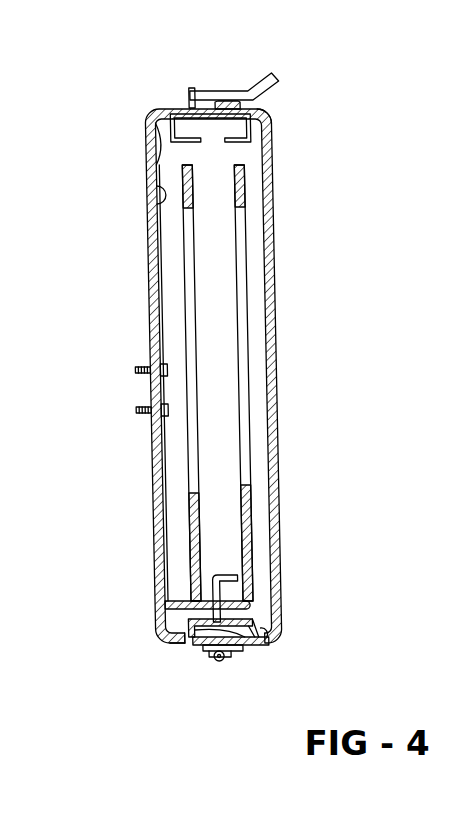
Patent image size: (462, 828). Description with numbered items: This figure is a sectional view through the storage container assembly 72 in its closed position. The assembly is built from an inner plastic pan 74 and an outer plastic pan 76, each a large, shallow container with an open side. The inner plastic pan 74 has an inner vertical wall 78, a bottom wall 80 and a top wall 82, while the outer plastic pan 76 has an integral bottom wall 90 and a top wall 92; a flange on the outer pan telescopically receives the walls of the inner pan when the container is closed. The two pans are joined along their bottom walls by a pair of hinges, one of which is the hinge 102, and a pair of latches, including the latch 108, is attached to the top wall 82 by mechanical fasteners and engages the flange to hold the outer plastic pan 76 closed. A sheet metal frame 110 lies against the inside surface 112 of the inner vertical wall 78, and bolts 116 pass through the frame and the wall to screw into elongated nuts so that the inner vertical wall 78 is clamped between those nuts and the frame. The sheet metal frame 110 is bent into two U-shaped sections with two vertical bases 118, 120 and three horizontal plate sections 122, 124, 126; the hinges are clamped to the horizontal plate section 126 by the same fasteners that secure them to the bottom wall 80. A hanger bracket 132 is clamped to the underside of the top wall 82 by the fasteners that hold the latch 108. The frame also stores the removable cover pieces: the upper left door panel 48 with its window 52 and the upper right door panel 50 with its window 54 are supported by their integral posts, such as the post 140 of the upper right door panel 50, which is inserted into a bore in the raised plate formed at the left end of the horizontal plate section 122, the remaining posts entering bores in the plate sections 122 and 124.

The storage container assembly 72 is at (327, 117).
The inner plastic pan 74 is at (167, 645).
The outer plastic pan 76 is at (273, 188).
The inner vertical wall 78 is at (157, 622).
The bottom wall 80 is at (181, 648).
The top wall 82 is at (177, 112).
The bottom wall 90 is at (273, 641).
The top wall 92 is at (266, 108).
The hinge 102 is at (229, 662).
The latch 108 is at (262, 85).
The sheet metal frame 110 is at (150, 215).
The inside surface 112 is at (148, 128).
The bolts 116 is at (136, 370).
The vertical base 118 is at (257, 612).
The vertical base 120 is at (225, 656).
The horizontal plate section 122 is at (235, 595).
The horizontal plate section 124 is at (270, 625).
The horizontal plate section 126 is at (193, 653).
The hanger bracket 132 is at (256, 128).
The post 140 is at (217, 573).
The upper left door panel 48 is at (248, 518).
The upper right door panel 50 is at (197, 493).
The window 52 is at (245, 330).
The window 54 is at (193, 245).